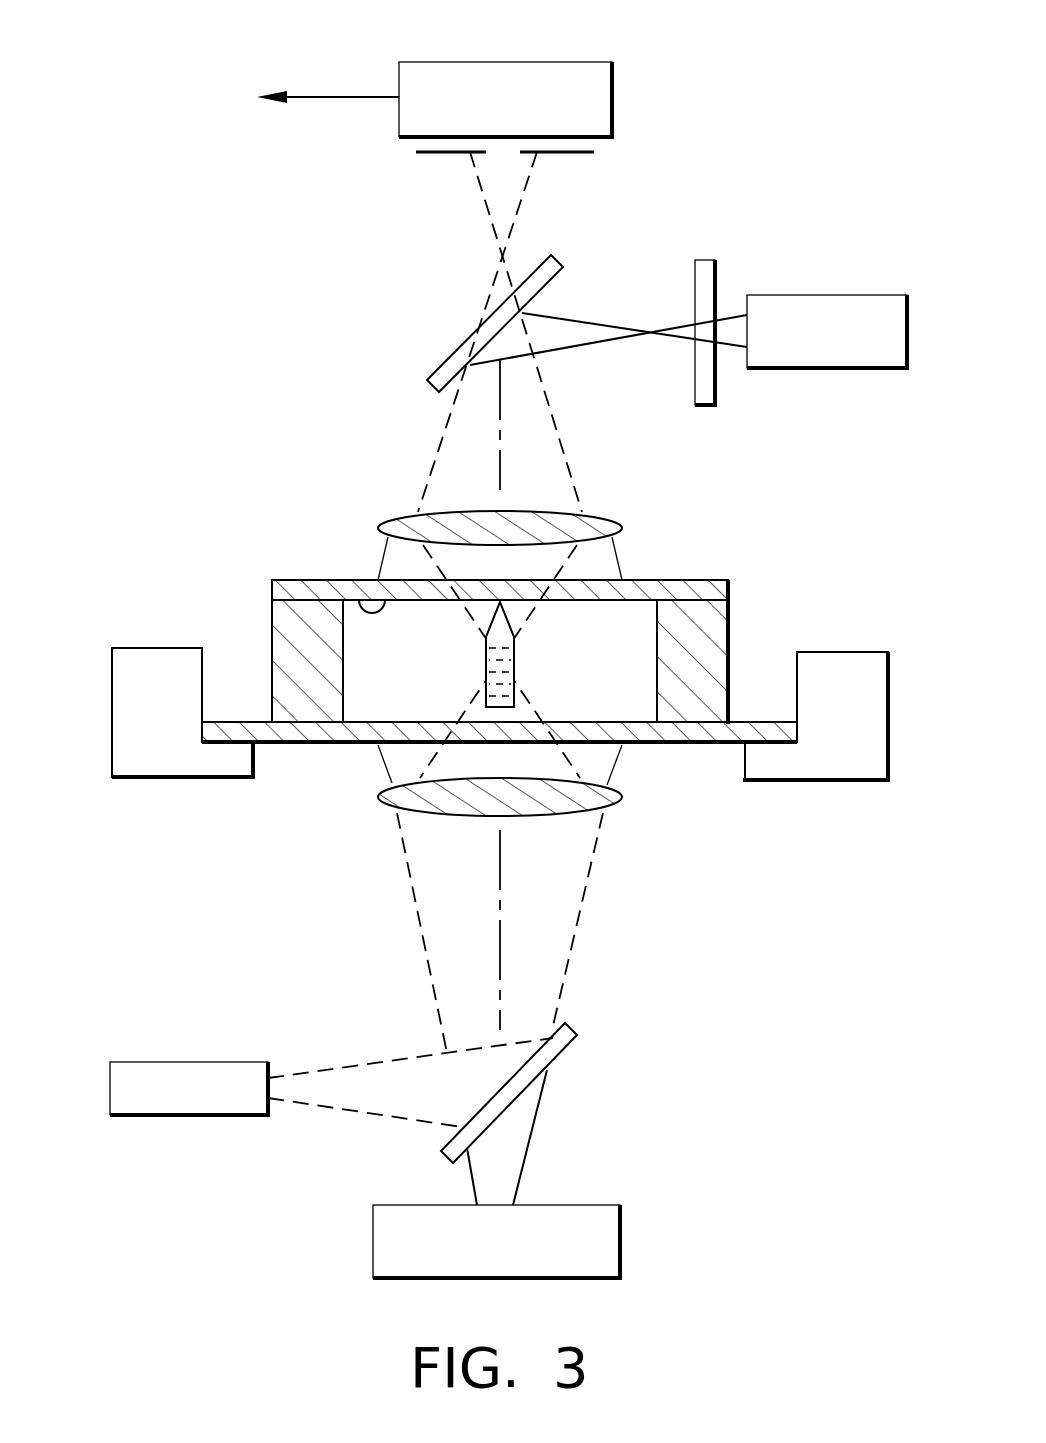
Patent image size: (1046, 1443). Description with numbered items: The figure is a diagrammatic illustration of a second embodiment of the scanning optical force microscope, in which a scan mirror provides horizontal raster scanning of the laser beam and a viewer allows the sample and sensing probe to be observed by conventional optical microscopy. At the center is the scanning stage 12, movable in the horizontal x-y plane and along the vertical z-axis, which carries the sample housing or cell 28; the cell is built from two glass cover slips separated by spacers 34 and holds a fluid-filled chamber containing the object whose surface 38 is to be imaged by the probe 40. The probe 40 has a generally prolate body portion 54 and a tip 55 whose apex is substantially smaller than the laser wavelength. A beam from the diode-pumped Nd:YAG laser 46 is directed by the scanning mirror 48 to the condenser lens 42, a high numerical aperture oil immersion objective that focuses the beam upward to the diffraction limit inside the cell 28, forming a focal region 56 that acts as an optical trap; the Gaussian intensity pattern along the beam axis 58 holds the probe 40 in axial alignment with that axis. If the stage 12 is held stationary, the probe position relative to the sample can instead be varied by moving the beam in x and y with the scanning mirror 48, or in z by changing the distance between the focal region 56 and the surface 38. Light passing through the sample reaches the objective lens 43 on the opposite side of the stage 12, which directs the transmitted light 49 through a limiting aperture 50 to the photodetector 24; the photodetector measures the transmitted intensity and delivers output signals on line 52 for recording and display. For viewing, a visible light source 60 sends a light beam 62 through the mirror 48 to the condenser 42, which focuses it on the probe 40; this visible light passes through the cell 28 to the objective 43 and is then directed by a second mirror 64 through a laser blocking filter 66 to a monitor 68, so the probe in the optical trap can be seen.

The scanning stage 12 is at (211, 776).
The photodetector 24 is at (612, 102).
The sample housing or cell 28 is at (662, 577).
The spacers 34 is at (733, 638).
The surface 38 is at (355, 596).
The probe 40 is at (516, 653).
The condenser lens 42 is at (615, 803).
The objective lens 43 is at (602, 512).
The laser 46 is at (228, 1118).
The mirror 48 is at (513, 1095).
The transmitted light 49 is at (465, 430).
The limiting aperture 50 is at (440, 153).
The line 52 is at (352, 95).
The body portion 54 is at (505, 697).
The tip 55 is at (497, 604).
The focal region 56 is at (473, 657).
The axis 58 is at (470, 950).
The visible light source 60 is at (372, 1228).
The light beam 62 is at (500, 1157).
The second mirror 64 is at (455, 347).
The laser blocking filter 66 is at (696, 275).
The monitor 68 is at (774, 296).